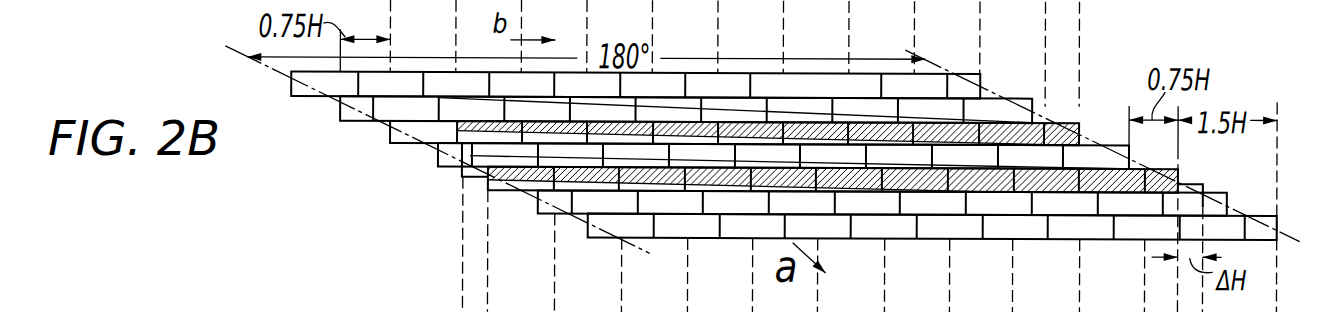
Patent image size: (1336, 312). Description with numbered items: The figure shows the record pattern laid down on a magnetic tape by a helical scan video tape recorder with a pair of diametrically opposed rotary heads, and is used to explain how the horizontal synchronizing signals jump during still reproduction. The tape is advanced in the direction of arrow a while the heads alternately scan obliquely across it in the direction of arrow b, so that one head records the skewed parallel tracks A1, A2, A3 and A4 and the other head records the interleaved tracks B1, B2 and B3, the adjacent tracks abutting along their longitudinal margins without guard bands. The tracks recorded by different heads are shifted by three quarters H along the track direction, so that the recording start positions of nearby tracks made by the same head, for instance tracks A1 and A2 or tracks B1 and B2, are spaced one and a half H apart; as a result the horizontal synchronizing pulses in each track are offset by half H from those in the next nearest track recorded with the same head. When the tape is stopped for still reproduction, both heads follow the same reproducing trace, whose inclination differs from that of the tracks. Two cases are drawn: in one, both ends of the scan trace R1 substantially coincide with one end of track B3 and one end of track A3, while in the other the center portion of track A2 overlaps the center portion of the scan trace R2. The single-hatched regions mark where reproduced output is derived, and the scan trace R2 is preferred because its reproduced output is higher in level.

The record track A1 is at (590, 232).
The record track A2 is at (488, 188).
The record track A3 is at (390, 136).
The record track A4 is at (291, 82).
The record track B1 is at (538, 207).
The record track B2 is at (438, 160).
The record track B3 is at (340, 108).
The scan trace R1 is at (987, 122).
The scan trace R2 is at (1097, 178).